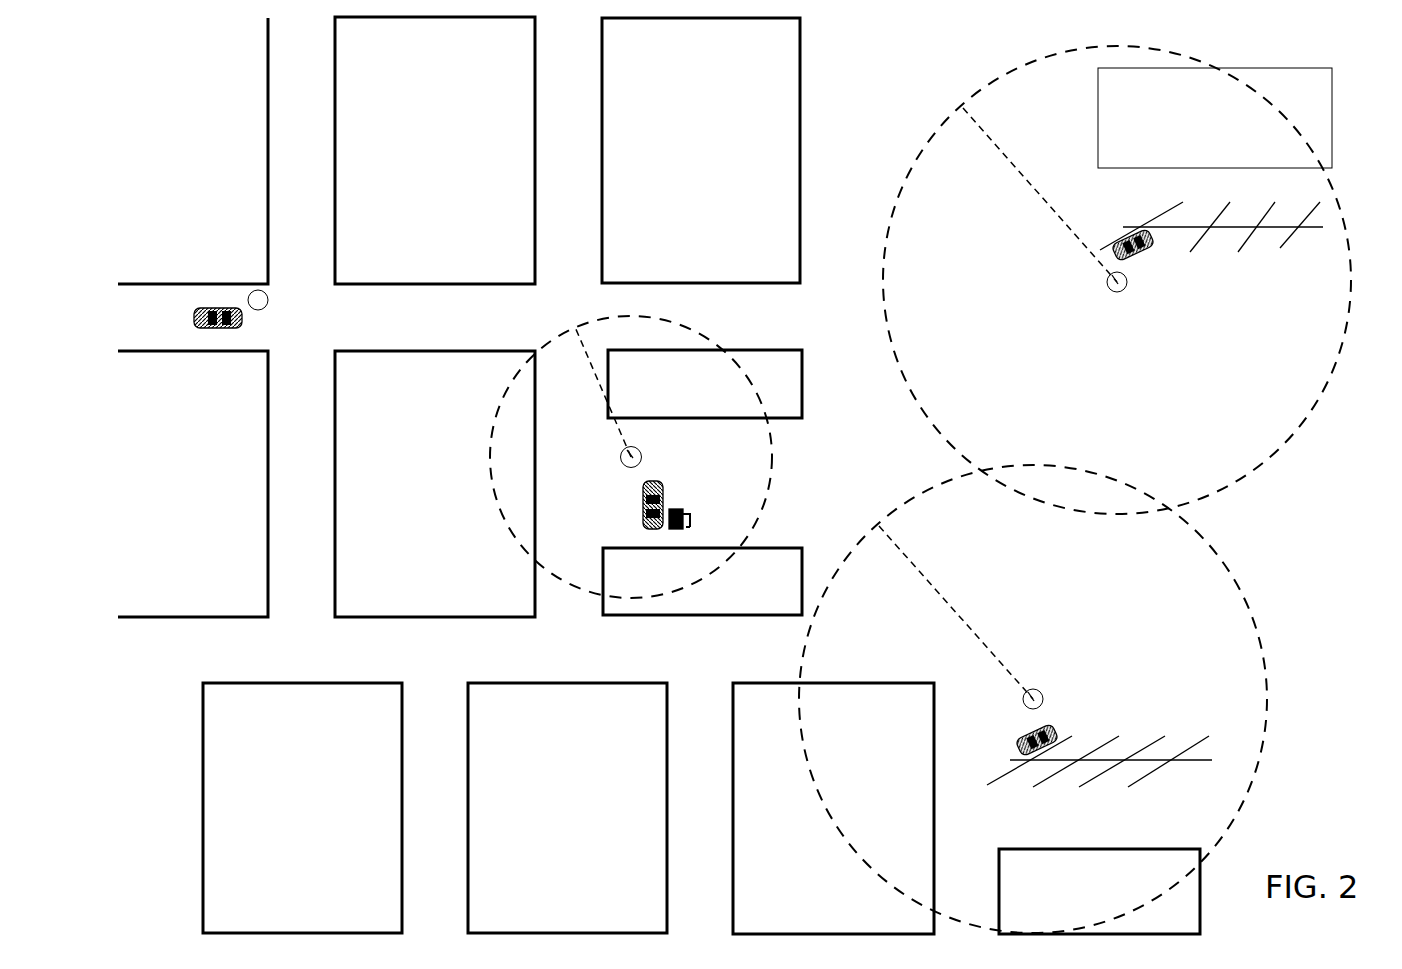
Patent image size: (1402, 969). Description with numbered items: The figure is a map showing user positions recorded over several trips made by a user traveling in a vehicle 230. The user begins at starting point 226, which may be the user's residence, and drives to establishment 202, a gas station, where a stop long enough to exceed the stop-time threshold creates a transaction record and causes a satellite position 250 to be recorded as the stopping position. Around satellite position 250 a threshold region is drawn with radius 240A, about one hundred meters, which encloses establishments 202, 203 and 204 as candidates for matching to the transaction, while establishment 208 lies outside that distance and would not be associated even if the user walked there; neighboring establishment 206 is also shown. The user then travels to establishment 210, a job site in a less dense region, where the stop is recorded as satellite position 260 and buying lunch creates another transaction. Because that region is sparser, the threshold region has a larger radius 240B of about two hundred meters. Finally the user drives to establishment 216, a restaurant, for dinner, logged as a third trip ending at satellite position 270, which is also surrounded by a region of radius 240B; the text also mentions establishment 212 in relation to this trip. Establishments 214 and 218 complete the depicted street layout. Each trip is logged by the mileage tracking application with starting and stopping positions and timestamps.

The establishment 202 is at (720, 608).
The establishment 203 is at (722, 410).
The establishment 204 is at (452, 507).
The establishment 206 is at (452, 170).
The establishment 208 is at (718, 175).
The establishment 210 is at (1232, 144).
The establishment 212 is at (319, 835).
The establishment 214 is at (584, 835).
The establishment 216 is at (851, 835).
The establishment 218 is at (1117, 920).
The starting point 226 is at (250, 296).
The vehicle 230 is at (207, 307).
The radius 240A is at (590, 365).
The radius 240B is at (1095, 258).
The satellite position 250 is at (627, 469).
The satellite position 260 is at (1320, 315).
The satellite position 270 is at (1220, 692).